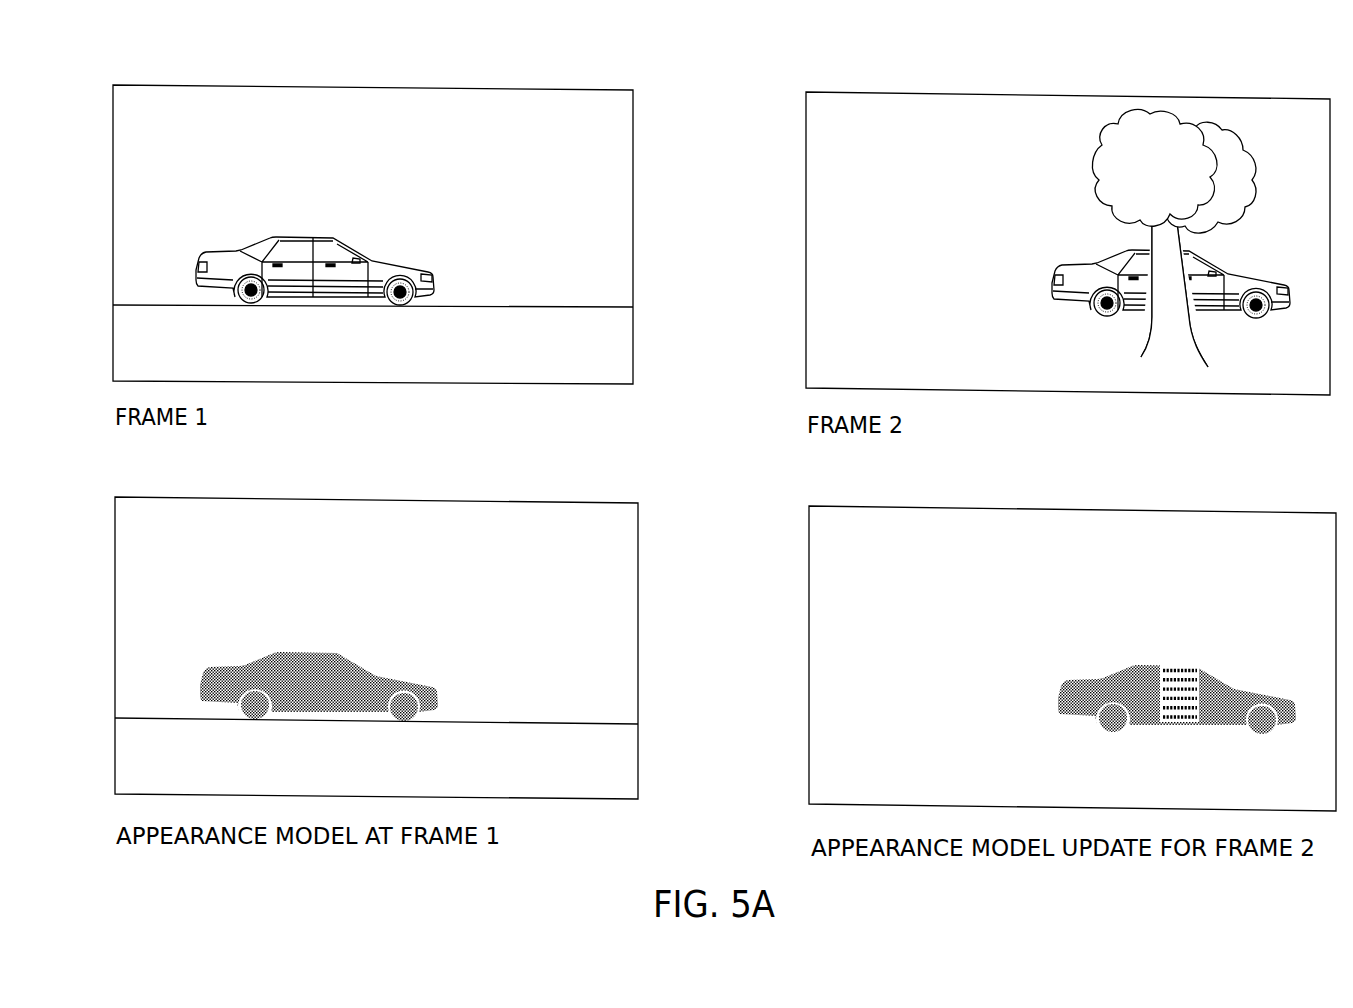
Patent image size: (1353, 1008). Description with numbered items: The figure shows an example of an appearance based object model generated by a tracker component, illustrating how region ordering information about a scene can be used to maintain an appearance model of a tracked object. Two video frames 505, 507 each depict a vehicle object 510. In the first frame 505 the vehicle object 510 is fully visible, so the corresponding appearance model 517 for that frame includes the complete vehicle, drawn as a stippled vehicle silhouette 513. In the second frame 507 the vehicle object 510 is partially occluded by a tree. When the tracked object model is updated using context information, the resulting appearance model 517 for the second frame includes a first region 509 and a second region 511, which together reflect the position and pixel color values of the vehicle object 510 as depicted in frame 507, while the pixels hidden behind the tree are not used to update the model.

The frame 505 is at (544, 87).
The frame 507 is at (1234, 95).
The vehicle object 510 is at (363, 253).
The appearance model 517 is at (466, 497).
The appearance model at frame 1 513 is at (311, 655).
The first region 509 is at (1067, 686).
The second region 511 is at (1243, 684).